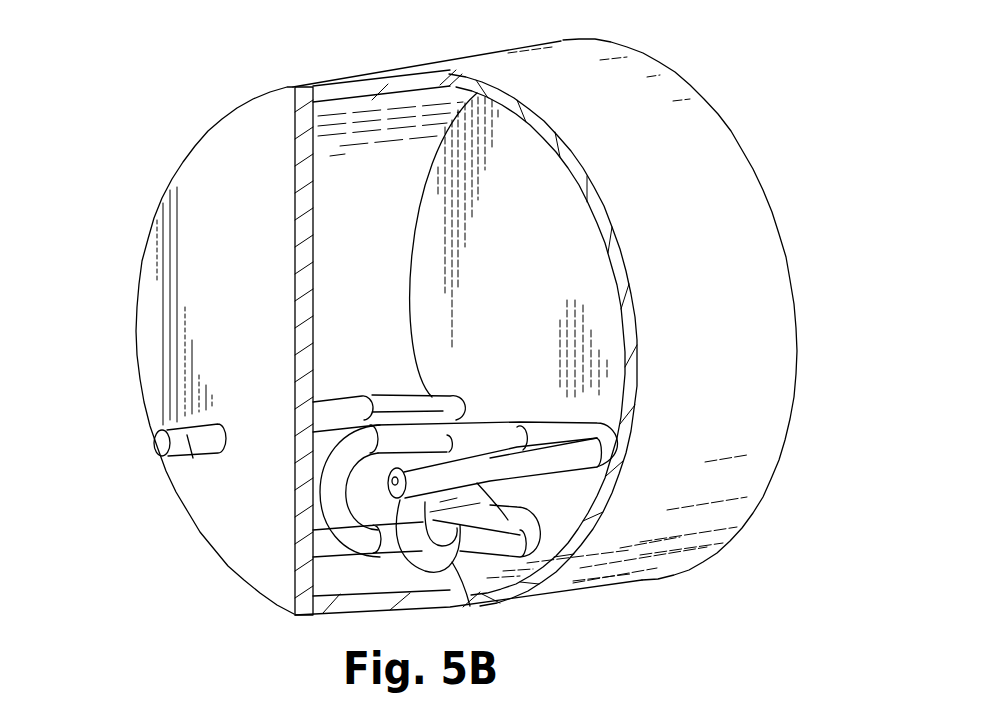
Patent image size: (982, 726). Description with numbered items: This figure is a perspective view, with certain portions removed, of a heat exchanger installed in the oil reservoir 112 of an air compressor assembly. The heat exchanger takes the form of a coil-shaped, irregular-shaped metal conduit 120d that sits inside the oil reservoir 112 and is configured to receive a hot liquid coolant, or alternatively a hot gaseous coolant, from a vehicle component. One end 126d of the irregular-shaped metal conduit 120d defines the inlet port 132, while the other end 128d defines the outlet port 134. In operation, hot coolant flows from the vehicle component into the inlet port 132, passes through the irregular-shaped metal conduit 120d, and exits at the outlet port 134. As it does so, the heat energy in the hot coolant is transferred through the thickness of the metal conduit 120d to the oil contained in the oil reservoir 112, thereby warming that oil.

The oil reservoir 112 is at (737, 137).
The irregular-shaped metal conduit 120d is at (500, 363).
The other end of the irregular-shaped metal conduit 128d is at (520, 463).
The outlet port 134 is at (392, 484).
The inlet port 132 is at (161, 443).
The one end of the irregular-shaped metal conduit 126d is at (187, 437).